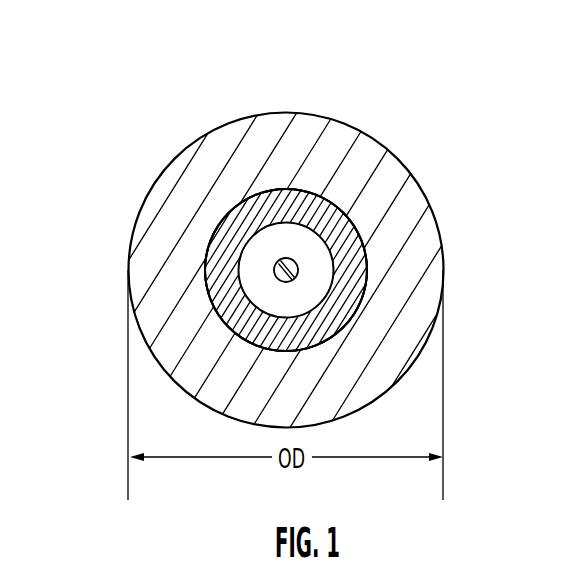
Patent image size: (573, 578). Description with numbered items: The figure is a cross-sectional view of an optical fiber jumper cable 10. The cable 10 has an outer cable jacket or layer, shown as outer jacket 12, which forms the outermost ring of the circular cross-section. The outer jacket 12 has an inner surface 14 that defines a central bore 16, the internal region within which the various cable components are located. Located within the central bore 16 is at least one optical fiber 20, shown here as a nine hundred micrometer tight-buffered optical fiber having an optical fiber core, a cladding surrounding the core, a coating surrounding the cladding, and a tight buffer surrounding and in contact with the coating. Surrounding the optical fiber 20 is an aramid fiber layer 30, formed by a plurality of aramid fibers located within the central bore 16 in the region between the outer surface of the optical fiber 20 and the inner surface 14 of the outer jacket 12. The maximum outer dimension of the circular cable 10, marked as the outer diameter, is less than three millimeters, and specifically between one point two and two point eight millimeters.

The cable 10 is at (128, 94).
The outer jacket 12 is at (350, 157).
The inner surface 14 is at (209, 256).
The central bore 16 is at (318, 342).
The optical fiber 20 is at (332, 278).
The aramid fiber layer 30 is at (352, 240).